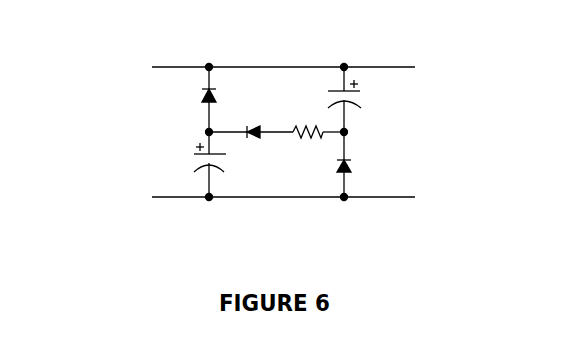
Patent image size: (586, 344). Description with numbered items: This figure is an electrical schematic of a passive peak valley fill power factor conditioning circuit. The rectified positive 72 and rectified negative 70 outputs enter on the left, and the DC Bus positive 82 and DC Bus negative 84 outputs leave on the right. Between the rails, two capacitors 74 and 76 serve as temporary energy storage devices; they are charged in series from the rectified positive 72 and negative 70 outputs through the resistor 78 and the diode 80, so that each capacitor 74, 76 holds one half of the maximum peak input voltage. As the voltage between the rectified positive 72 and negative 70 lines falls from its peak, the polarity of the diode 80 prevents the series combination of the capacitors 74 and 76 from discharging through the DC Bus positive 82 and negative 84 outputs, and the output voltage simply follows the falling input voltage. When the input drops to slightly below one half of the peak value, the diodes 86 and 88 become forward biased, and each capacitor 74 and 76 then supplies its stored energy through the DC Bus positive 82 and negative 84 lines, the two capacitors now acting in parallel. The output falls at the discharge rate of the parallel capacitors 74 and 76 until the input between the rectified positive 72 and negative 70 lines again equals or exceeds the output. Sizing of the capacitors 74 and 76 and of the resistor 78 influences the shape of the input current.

The rectified negative output 70 is at (64, 218).
The rectified positive output 72 is at (67, 40).
The capacitor 74 is at (231, 167).
The capacitor 76 is at (366, 102).
The resistor 78 is at (311, 145).
The diode 80 is at (254, 125).
The DC Bus positive output 82 is at (474, 40).
The DC Bus negative output 84 is at (475, 217).
The diode 86 is at (222, 91).
The diode 88 is at (352, 165).